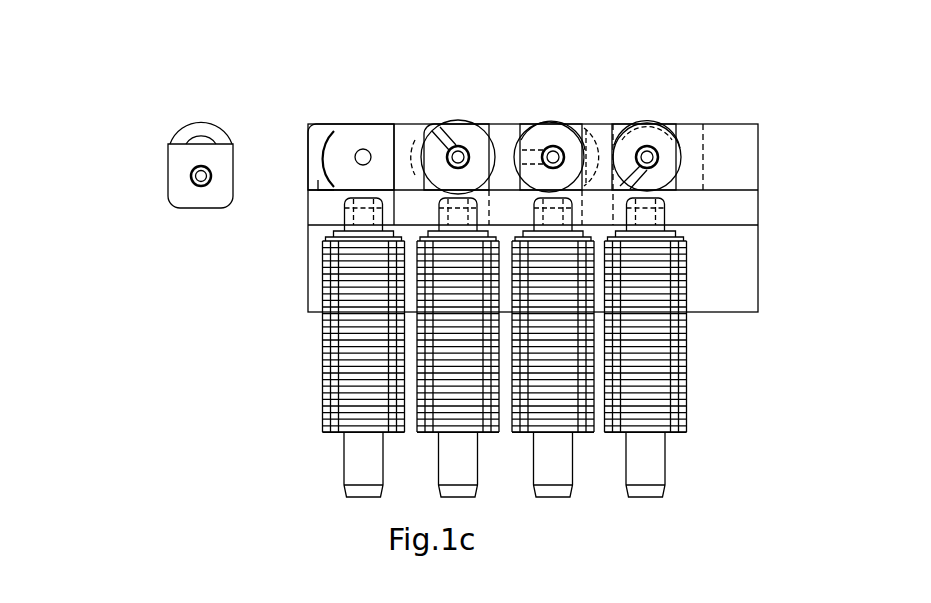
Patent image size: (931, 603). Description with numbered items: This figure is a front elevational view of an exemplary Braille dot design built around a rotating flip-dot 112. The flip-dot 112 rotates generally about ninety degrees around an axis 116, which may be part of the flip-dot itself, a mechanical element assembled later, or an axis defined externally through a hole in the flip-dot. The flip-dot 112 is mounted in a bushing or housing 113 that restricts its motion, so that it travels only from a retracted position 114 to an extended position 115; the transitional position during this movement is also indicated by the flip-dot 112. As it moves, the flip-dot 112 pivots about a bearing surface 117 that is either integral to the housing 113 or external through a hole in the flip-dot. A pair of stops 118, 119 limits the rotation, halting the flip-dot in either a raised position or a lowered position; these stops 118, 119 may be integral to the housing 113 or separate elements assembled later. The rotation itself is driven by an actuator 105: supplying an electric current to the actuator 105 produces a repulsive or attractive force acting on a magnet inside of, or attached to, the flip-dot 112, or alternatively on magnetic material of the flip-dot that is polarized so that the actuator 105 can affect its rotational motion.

The actuator 105 is at (329, 468).
The flip-dot 112 is at (573, 106).
The housing 113 is at (740, 111).
The retracted position 114 is at (474, 112).
The extended position 115 is at (664, 94).
The axis 116 is at (174, 171).
The bearing surface 117 is at (369, 116).
The stop 118 is at (318, 195).
The stop 119 is at (318, 120).